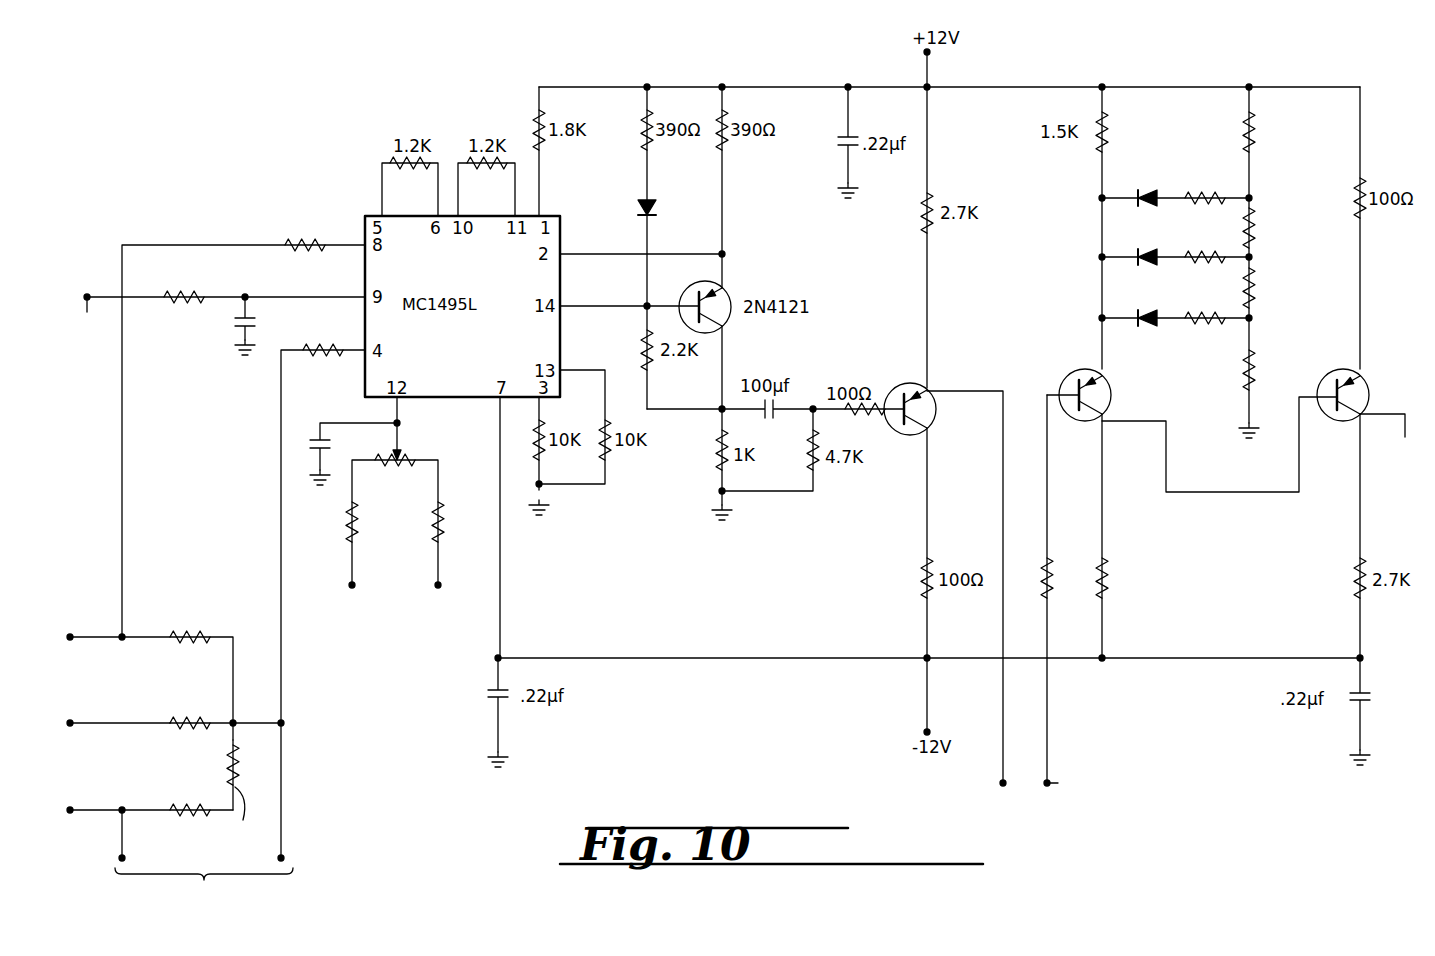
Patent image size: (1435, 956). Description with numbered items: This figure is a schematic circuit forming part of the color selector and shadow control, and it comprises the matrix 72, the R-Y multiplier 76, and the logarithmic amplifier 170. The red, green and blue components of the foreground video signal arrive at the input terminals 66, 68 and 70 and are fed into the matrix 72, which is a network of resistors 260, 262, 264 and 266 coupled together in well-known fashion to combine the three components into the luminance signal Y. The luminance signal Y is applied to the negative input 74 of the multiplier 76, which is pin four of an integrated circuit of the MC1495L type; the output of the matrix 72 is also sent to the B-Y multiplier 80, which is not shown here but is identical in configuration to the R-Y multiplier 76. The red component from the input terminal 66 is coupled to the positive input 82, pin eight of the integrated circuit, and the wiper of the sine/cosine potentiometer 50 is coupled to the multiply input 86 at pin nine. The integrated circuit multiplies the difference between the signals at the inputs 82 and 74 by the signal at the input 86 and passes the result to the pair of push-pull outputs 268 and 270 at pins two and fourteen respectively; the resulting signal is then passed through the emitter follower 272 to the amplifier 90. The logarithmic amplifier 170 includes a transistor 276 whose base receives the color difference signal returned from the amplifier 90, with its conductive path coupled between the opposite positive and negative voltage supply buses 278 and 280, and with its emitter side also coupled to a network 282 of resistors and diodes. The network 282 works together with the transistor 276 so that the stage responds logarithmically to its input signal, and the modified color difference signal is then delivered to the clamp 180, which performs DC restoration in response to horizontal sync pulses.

The sine/cosine potentiometer 50 is at (60, 323).
The input terminal 66 is at (70, 640).
The input terminal 68 is at (70, 726).
The input terminal 70 is at (70, 813).
The matrix 72 is at (199, 868).
The negative input 74 is at (362, 357).
The multiplier 76 is at (476, 500).
The multiplier 80 is at (344, 910).
The positive input 82 is at (362, 250).
The multiply input 86 is at (362, 300).
The amplifier 90 is at (1098, 814).
The logarithmic amplifier 170 is at (1228, 590).
The clamp 180 is at (1401, 496).
The resistor 260 is at (170, 640).
The resistor 262 is at (170, 726).
The resistor 264 is at (172, 808).
The resistor 266 is at (204, 797).
The push-pull output 268 is at (598, 262).
The push-pull output 270 is at (622, 308).
The emitter follower 272 is at (900, 387).
The transistor 276 is at (1069, 378).
The positive voltage supply bus 278 is at (1178, 88).
The negative voltage supply bus 280 is at (1222, 668).
The network of resistors and diodes 282 is at (1174, 165).